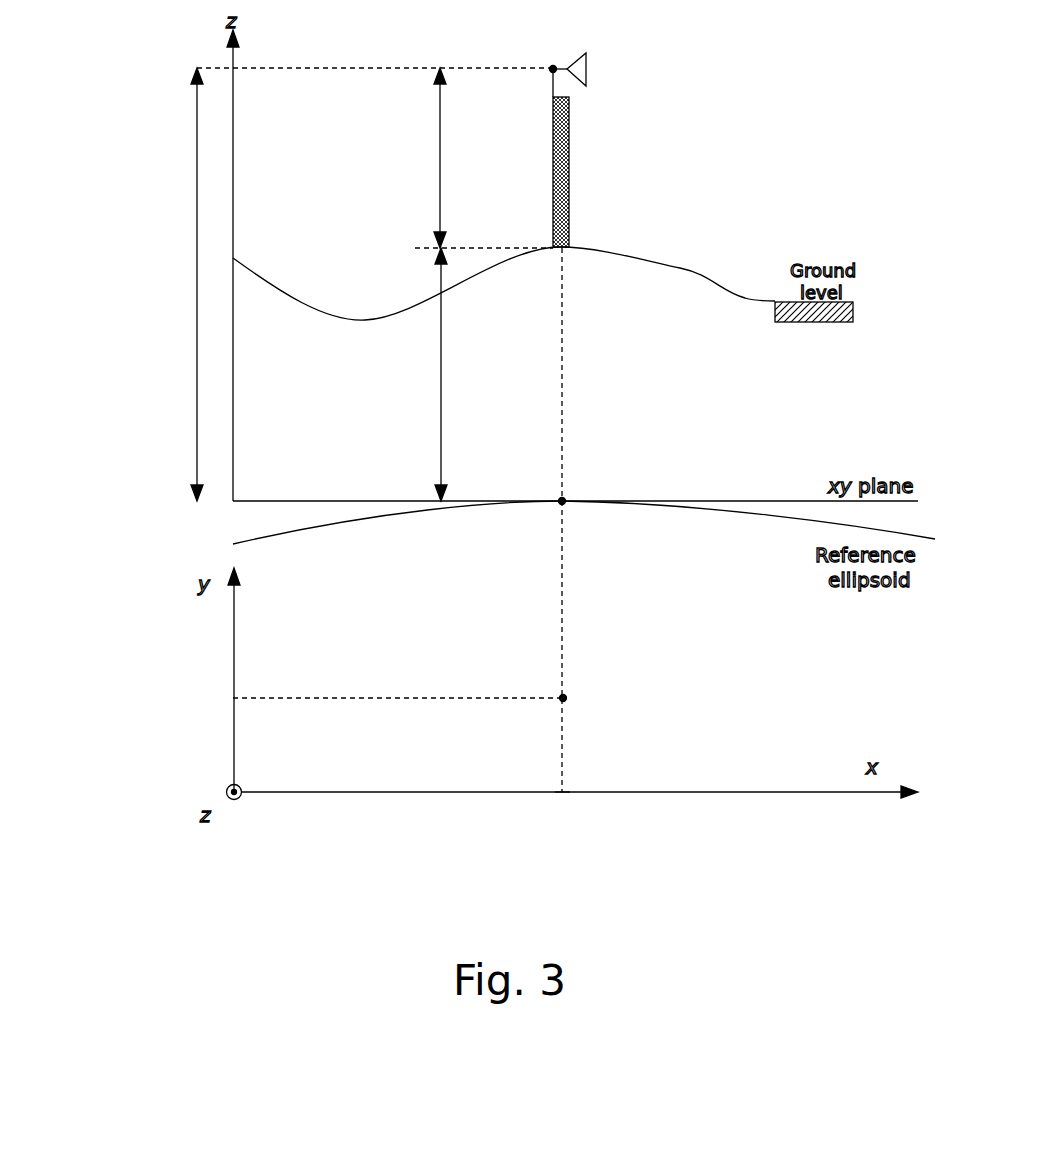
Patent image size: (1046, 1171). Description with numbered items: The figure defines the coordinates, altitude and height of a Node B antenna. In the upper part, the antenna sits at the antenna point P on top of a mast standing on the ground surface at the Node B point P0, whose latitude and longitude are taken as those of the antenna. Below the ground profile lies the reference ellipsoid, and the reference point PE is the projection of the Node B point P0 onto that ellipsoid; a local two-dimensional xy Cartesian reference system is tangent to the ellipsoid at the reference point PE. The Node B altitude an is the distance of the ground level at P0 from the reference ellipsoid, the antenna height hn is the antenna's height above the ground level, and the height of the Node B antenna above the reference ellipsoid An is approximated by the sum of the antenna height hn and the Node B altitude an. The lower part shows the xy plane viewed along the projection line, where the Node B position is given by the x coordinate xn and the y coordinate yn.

The antenna point P is at (561, 141).
The Node B point P0 is at (580, 374).
The reference point PE is at (579, 632).
The antenna height hn is at (420, 158).
The Node B altitude an is at (421, 374).
The height of the Node B antenna above the reference ellipsoid An is at (126, 284).
The x coordinate xn is at (568, 812).
The y coordinate yn is at (380, 701).